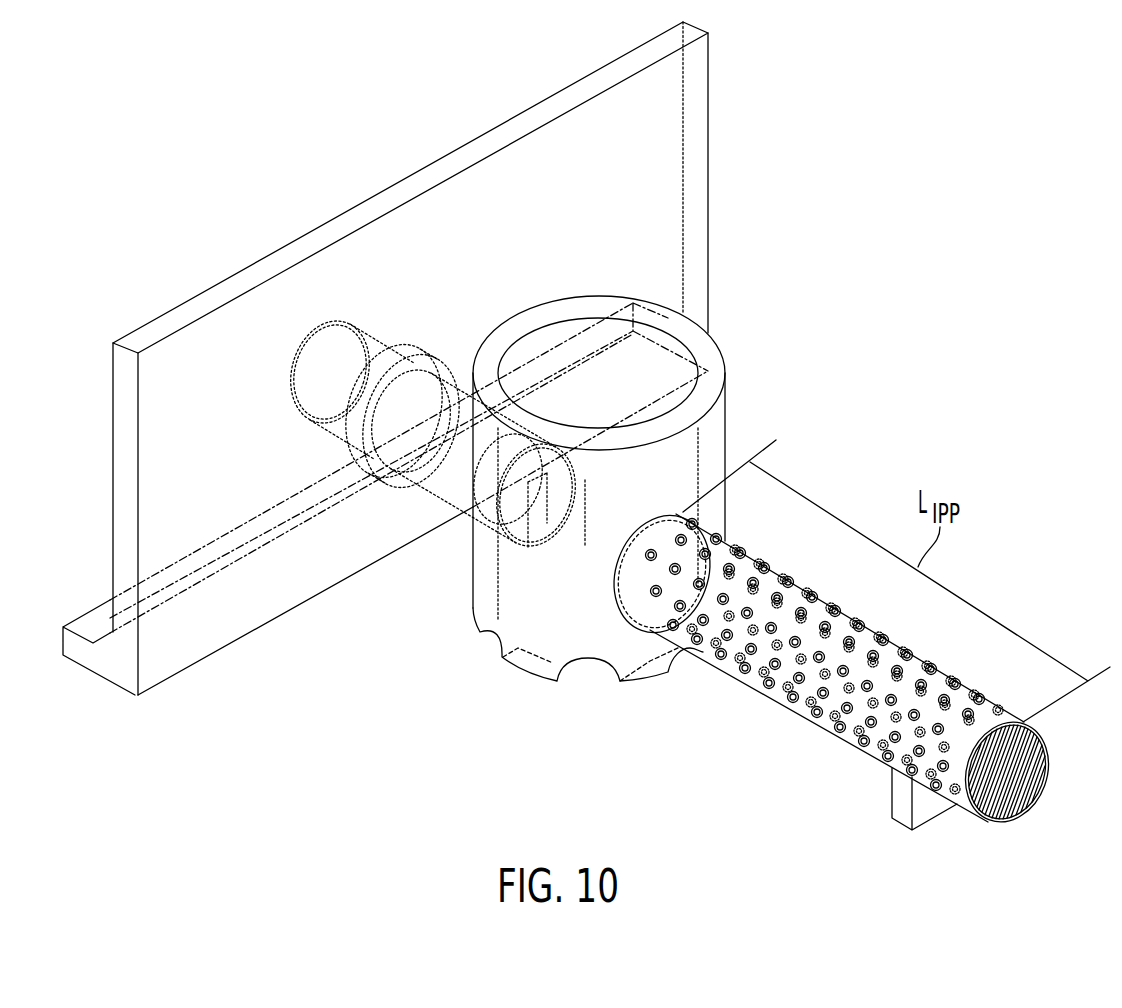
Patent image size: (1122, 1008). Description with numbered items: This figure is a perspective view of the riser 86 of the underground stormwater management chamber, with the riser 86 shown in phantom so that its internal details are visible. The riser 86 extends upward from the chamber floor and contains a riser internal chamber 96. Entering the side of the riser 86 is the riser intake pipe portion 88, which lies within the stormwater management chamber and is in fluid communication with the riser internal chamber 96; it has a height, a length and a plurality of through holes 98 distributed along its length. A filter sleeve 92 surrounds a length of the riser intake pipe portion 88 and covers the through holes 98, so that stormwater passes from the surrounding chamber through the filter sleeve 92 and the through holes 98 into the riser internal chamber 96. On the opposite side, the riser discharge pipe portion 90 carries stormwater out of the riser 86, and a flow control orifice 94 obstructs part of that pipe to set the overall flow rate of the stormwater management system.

The riser 86 is at (708, 302).
The riser intake pipe portion 88 is at (830, 668).
The riser discharge pipe portion 90 is at (328, 333).
The filter sleeve 92 is at (973, 688).
The flow control orifice 94 is at (550, 493).
The riser internal chamber 96 is at (621, 360).
The through holes 98 is at (789, 600).